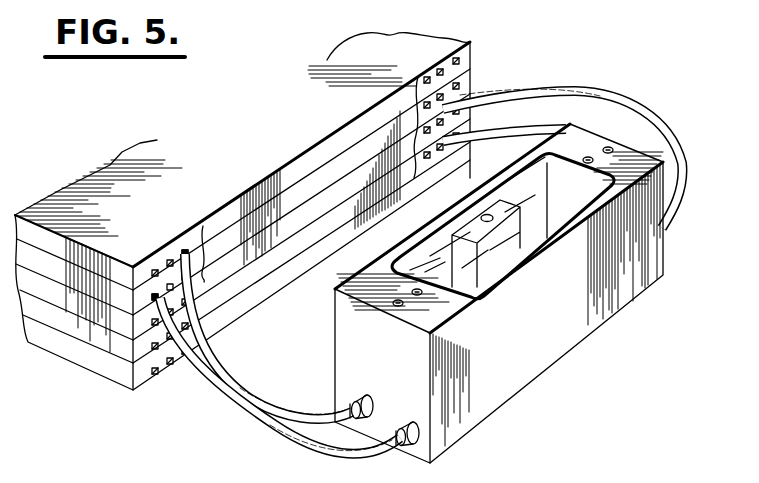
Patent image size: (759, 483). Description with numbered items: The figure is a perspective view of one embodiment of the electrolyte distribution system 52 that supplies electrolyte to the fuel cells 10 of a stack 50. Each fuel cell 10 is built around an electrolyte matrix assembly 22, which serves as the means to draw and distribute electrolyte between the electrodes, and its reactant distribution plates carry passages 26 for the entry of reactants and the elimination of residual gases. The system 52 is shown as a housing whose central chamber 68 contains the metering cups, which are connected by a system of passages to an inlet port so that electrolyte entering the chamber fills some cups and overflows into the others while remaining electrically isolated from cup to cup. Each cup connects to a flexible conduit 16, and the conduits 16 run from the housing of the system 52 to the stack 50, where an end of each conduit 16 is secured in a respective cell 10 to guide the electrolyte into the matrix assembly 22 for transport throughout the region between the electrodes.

The fuel cell 10 is at (48, 266).
The conduit 16 is at (642, 103).
The electrolyte matrix assembly 22 is at (441, 67).
The passages 26 is at (168, 258).
The stack 50 is at (281, 216).
The electrolyte distribution system 52 is at (511, 293).
The central chamber 68 is at (618, 285).